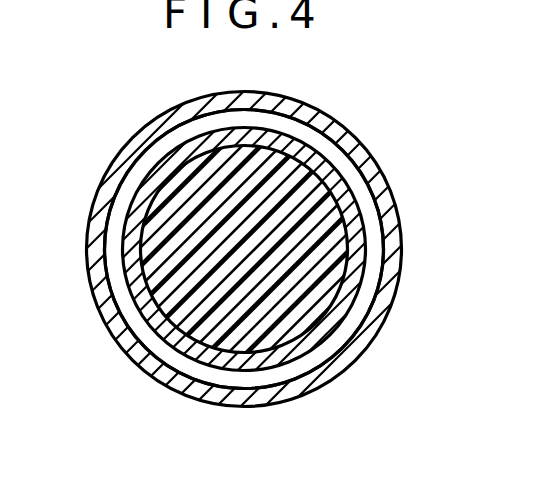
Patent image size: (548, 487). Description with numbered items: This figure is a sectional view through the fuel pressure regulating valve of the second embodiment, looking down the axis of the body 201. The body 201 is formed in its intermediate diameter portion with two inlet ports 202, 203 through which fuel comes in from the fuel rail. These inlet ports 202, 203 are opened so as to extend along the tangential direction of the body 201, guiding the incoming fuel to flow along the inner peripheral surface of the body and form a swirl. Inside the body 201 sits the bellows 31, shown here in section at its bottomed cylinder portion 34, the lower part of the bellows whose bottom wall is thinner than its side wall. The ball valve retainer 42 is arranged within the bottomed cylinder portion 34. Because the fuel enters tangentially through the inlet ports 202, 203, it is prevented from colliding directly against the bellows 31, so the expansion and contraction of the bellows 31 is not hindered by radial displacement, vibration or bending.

The body 201 is at (125, 152).
The inlet port 202 is at (359, 152).
The inlet port 203 is at (127, 342).
The bellows 31 is at (213, 373).
The ball valve retainer 42 is at (353, 311).
The bottomed cylinder portion 34 is at (307, 320).